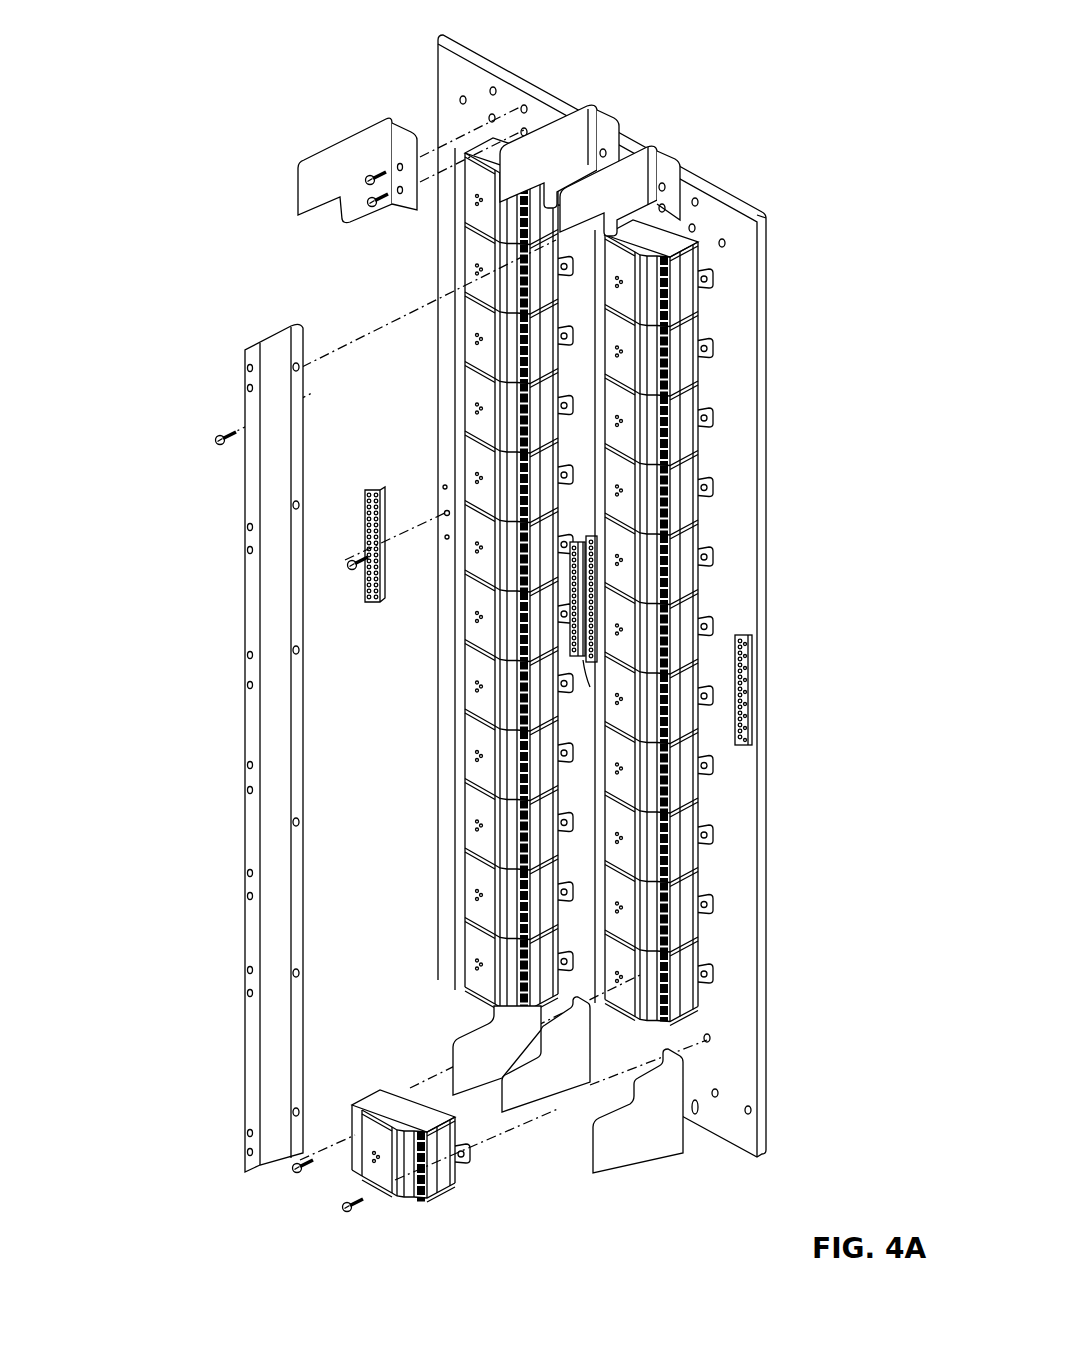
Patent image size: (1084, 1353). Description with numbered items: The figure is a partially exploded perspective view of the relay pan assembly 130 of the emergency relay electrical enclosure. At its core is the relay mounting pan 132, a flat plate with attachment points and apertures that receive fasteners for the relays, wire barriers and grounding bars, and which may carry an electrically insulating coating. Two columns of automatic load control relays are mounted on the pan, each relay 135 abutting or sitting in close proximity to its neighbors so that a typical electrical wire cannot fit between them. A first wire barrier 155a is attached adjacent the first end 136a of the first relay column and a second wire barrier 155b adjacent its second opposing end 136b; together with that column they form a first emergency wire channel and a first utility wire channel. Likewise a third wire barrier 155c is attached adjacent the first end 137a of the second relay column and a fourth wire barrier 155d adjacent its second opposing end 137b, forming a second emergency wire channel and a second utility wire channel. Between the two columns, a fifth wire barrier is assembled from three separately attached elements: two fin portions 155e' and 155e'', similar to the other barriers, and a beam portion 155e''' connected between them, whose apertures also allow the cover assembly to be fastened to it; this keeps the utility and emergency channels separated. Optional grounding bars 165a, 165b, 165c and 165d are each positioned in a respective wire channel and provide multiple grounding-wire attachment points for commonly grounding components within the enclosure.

The relay pan assembly 130 is at (783, 70).
The relay mounting pan 132 is at (750, 250).
The relay 135 is at (703, 447).
The first end of the first column of relays 136a is at (484, 144).
The second opposing end of the first column of relays 136b is at (468, 1002).
The first end of the second column of relays 137a is at (658, 232).
The second opposing end of the second column of relays 137b is at (418, 1203).
The first wire barrier 155a is at (306, 190).
The second wire barrier 155b is at (460, 1058).
The third wire barrier 155c is at (637, 158).
The fourth wire barrier 155d is at (625, 1153).
The fin portion 155e' is at (607, 143).
The fin portion 155e'' is at (541, 1097).
The beam portion 155e''' is at (216, 748).
The first grounding bar 165a is at (378, 490).
The second grounding bar 165b is at (578, 600).
The third grounding bar 165c is at (588, 680).
The fourth grounding bar 165d is at (748, 672).